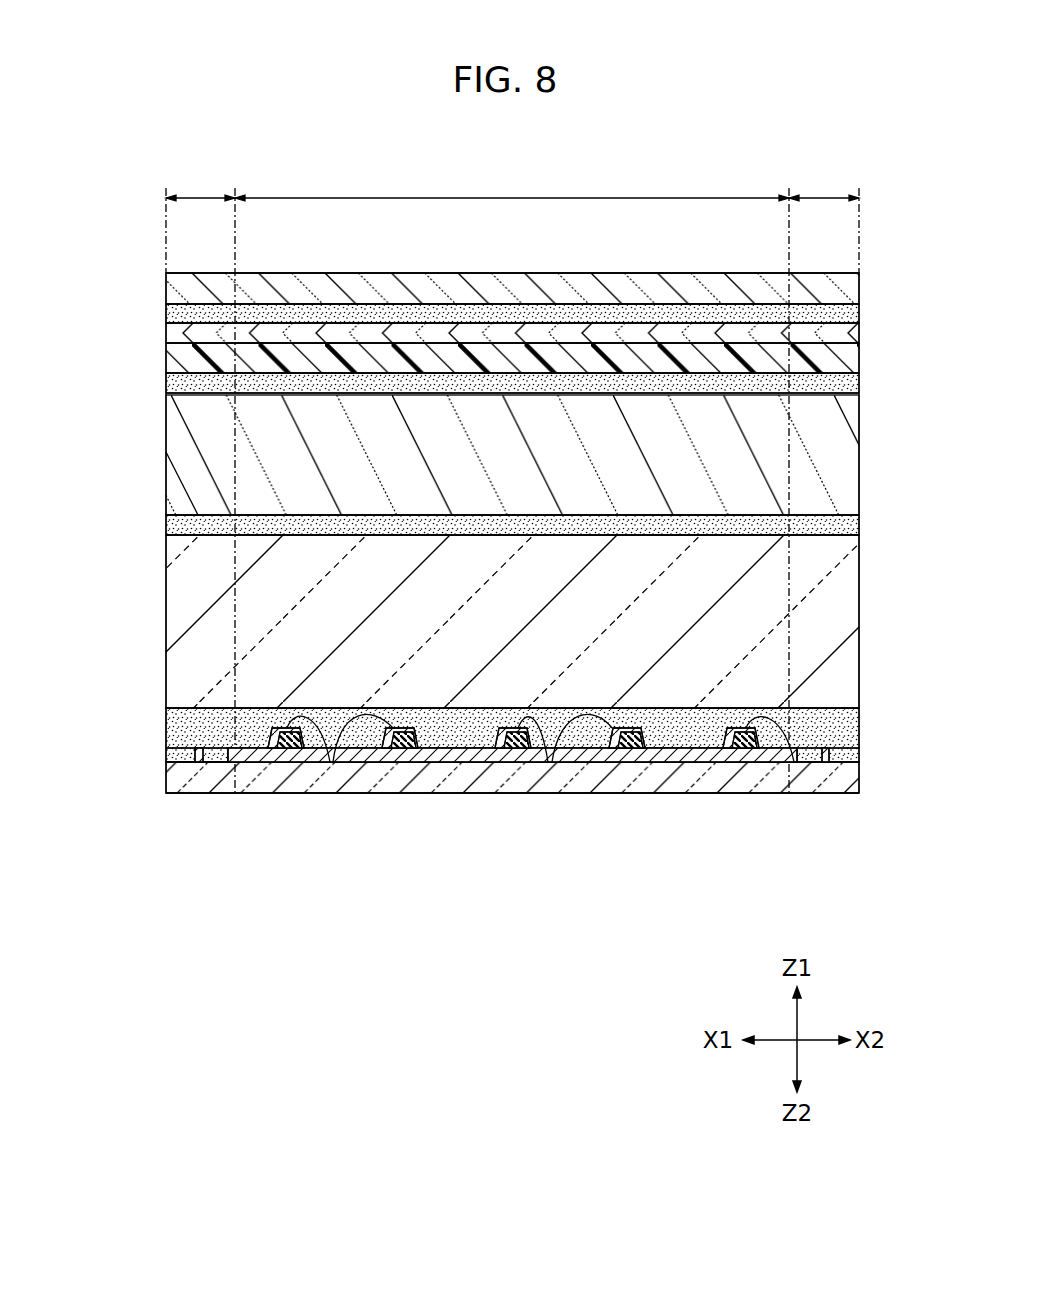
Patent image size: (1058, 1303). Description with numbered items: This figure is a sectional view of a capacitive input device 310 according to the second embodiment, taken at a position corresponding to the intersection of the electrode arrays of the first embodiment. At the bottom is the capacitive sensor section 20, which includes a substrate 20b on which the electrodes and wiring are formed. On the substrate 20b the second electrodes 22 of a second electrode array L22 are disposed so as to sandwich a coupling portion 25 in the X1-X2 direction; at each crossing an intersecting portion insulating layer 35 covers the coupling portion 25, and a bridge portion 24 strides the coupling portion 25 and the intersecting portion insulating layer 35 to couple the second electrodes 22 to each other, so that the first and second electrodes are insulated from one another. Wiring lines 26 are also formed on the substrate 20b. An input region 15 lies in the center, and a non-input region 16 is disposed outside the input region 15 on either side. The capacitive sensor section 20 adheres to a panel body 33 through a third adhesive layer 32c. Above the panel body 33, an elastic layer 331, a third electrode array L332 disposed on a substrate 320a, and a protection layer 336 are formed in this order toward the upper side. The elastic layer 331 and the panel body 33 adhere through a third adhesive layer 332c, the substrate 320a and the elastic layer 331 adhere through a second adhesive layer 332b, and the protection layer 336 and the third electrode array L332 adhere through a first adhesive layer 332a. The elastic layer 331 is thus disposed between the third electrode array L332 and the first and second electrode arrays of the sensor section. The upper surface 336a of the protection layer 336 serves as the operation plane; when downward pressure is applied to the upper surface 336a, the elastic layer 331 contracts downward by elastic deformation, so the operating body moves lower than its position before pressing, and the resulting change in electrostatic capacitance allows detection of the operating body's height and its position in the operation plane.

The capacitive input device 310 is at (873, 884).
The input region 15 is at (512, 479).
The non-input region 16 is at (512, 219).
The capacitive sensor section 20 is at (125, 850).
The substrate 20b is at (176, 786).
The second electrode 22 is at (250, 754).
The bridge portion 24 is at (331, 763).
The coupling portion 25 is at (271, 750).
The wiring line 26 is at (199, 764).
The intersecting portion insulating layer 35 is at (294, 750).
The third adhesive layer 32c is at (832, 722).
The panel body 33 is at (180, 573).
The elastic layer 331 is at (186, 452).
The first adhesive layer 332a is at (830, 311).
The second adhesive layer 332b is at (830, 381).
The third adhesive layer 332c is at (830, 521).
The substrate 320a is at (190, 365).
The protection layer 336 is at (190, 289).
The upper surface 336a is at (686, 273).
The second electrode array L22 is at (150, 746).
The third electrode array L332 is at (186, 333).